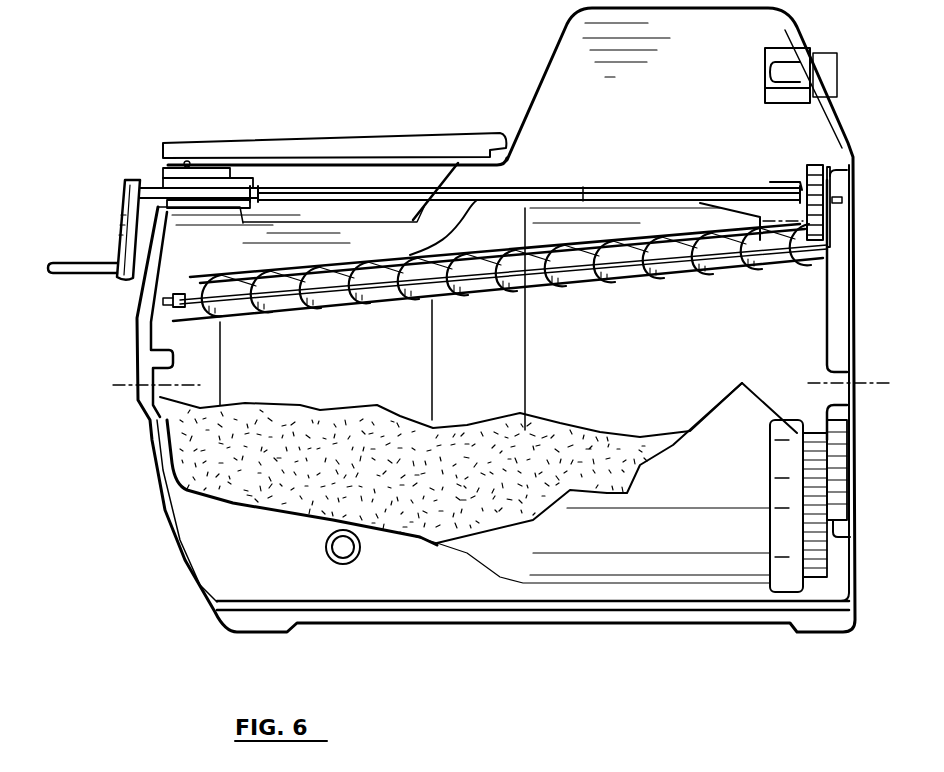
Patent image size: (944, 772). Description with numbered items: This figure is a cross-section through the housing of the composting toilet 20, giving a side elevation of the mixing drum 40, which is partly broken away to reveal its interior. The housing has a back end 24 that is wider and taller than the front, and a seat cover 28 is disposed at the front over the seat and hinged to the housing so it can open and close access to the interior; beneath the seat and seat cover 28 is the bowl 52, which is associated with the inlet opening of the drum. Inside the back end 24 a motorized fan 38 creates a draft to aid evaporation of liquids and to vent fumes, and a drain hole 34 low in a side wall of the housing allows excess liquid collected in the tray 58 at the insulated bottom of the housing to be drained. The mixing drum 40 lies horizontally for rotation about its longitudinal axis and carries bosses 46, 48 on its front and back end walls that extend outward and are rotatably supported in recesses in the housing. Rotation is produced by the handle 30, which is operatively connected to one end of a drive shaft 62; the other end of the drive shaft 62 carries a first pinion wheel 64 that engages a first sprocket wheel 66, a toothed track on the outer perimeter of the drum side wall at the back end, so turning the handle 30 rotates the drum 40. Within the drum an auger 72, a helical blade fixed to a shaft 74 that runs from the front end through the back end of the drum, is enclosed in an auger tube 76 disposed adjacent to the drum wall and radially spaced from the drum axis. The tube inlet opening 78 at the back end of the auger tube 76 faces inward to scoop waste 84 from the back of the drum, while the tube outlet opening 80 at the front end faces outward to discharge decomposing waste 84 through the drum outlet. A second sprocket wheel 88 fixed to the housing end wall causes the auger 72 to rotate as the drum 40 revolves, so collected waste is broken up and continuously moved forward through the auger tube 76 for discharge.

The composting toilet 20 is at (380, 66).
The back end 24 is at (550, 57).
The seat cover 28 is at (288, 141).
The handle 30 is at (90, 262).
The drain hole 34 is at (328, 556).
The motorized fan 38 is at (765, 65).
The mixing drum 40 is at (650, 187).
The boss 46 is at (170, 367).
The boss 48 is at (830, 370).
The bowl 52 is at (438, 172).
The tray 58 is at (363, 600).
The drive shaft 62 is at (692, 200).
The first pinion wheel 64 is at (813, 163).
The first sprocket wheel 66 is at (808, 480).
The auger 72 is at (600, 287).
The shaft 74 is at (418, 292).
The auger tube 76 is at (455, 298).
The tube inlet opening 78 is at (720, 273).
The tube outlet opening 80 is at (185, 287).
The waste 84 is at (303, 410).
The second sprocket wheel 88 is at (852, 536).